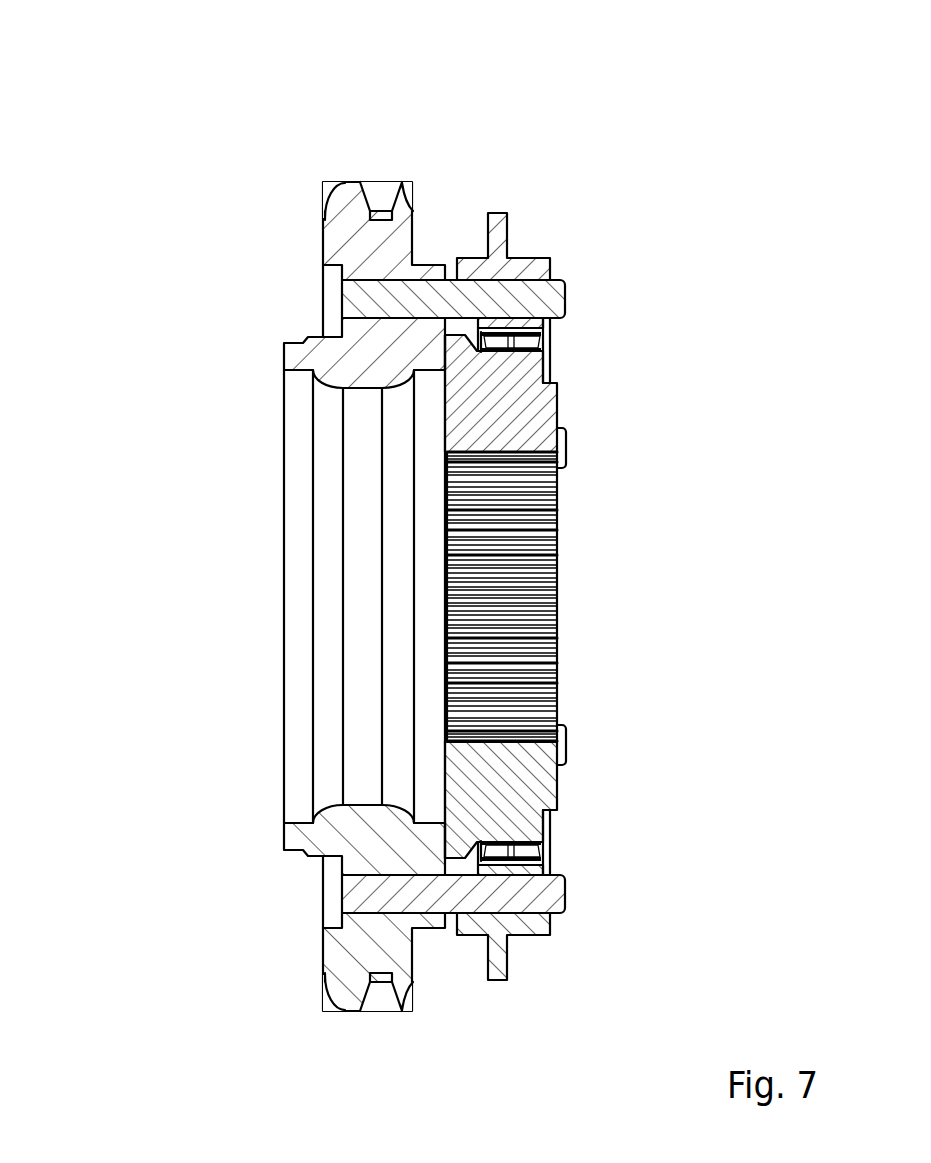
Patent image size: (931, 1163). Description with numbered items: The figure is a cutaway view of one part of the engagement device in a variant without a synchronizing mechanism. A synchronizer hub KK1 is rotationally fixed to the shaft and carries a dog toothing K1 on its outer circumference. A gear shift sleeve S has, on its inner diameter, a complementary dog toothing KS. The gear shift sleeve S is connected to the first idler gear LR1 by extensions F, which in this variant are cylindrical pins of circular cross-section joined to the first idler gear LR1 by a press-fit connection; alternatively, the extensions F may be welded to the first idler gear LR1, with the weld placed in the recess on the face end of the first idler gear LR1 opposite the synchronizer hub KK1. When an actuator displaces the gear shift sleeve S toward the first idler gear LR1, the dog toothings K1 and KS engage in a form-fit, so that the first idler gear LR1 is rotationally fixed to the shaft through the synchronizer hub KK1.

The first idler gear LR1 is at (360, 245).
The synchronizer hub KK1 is at (487, 417).
The dog toothing K1 is at (457, 338).
The gear shift sleeve S is at (498, 228).
The dog toothing KS is at (492, 342).
The extensions F is at (533, 303).